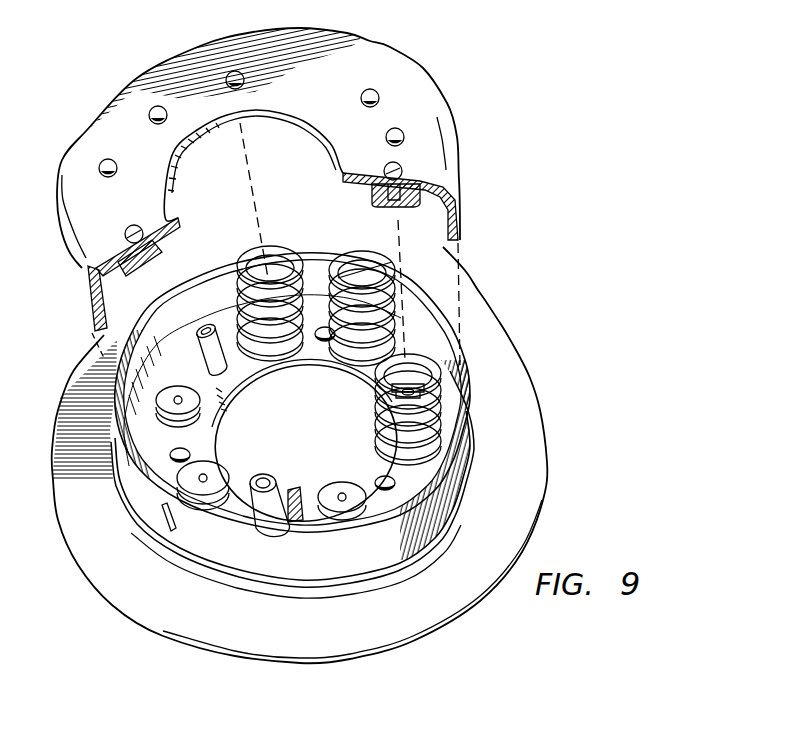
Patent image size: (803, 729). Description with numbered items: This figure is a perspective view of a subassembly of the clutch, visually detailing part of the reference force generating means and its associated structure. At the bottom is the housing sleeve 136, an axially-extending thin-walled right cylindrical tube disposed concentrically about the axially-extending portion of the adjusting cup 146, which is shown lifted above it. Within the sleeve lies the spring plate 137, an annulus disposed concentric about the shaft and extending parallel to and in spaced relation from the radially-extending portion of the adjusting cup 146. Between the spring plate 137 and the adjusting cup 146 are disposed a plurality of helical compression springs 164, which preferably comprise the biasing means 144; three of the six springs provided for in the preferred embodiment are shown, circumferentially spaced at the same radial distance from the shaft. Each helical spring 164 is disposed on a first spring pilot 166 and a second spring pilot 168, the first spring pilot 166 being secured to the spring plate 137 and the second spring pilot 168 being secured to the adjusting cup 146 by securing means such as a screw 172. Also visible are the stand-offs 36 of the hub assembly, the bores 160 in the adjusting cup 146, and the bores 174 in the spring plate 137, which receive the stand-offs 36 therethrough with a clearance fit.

The stand-offs 36 is at (262, 505).
The housing sleeve 136 is at (350, 563).
The spring plate 137 is at (225, 393).
The biasing means 144 is at (432, 357).
The adjusting cup 146 is at (274, 193).
The bores 160 is at (372, 88).
The helical compression springs 164 is at (398, 277).
The first spring pilot 166 is at (220, 477).
The second spring pilot 168 is at (87, 305).
The screw 172 is at (368, 198).
The bores 174 is at (208, 374).